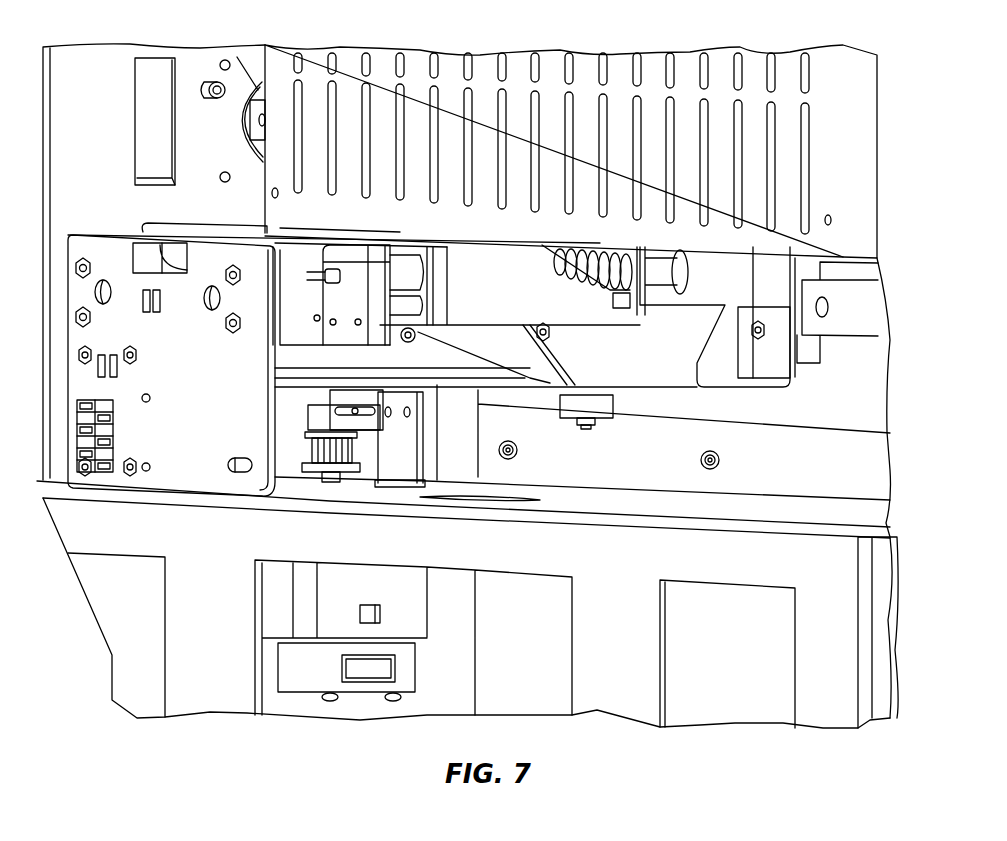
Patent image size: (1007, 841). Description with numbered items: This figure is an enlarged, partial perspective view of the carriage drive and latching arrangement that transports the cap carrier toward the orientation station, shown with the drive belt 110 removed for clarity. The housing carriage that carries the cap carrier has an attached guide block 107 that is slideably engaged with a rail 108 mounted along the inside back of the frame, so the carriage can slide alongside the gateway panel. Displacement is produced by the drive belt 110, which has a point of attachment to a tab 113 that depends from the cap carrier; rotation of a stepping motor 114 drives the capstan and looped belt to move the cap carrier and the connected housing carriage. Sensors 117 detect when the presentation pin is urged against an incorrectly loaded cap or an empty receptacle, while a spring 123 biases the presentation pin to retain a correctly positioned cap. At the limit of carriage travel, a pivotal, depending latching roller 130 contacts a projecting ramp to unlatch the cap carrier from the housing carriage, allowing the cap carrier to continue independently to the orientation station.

The guide block 107 is at (810, 348).
The rail 108 is at (863, 315).
The drive belt 110 is at (308, 458).
The tab 113 is at (420, 443).
The stepping motor 114 is at (430, 598).
The sensors 117 is at (330, 283).
The spring 123 is at (596, 258).
The latching roller 130 is at (615, 410).